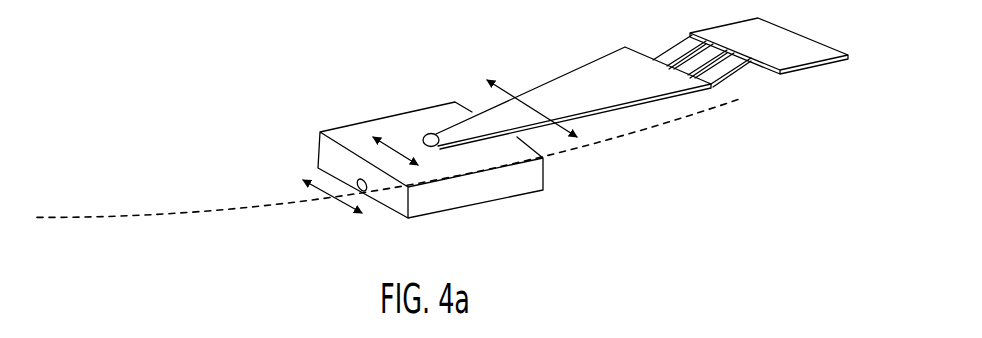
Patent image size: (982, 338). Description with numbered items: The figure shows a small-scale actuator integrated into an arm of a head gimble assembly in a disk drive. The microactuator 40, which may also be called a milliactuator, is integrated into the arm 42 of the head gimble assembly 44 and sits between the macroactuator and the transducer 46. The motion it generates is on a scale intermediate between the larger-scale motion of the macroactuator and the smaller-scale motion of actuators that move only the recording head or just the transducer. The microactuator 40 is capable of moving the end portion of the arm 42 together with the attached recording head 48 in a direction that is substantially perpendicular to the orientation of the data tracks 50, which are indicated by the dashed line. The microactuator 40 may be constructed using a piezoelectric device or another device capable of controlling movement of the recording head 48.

The microactuator 40 is at (745, 67).
The arm 42 is at (563, 90).
The head gimble assembly 44 is at (600, 169).
The transducer 46 is at (367, 193).
The recording head 48 is at (407, 125).
The data tracks 50 is at (158, 215).